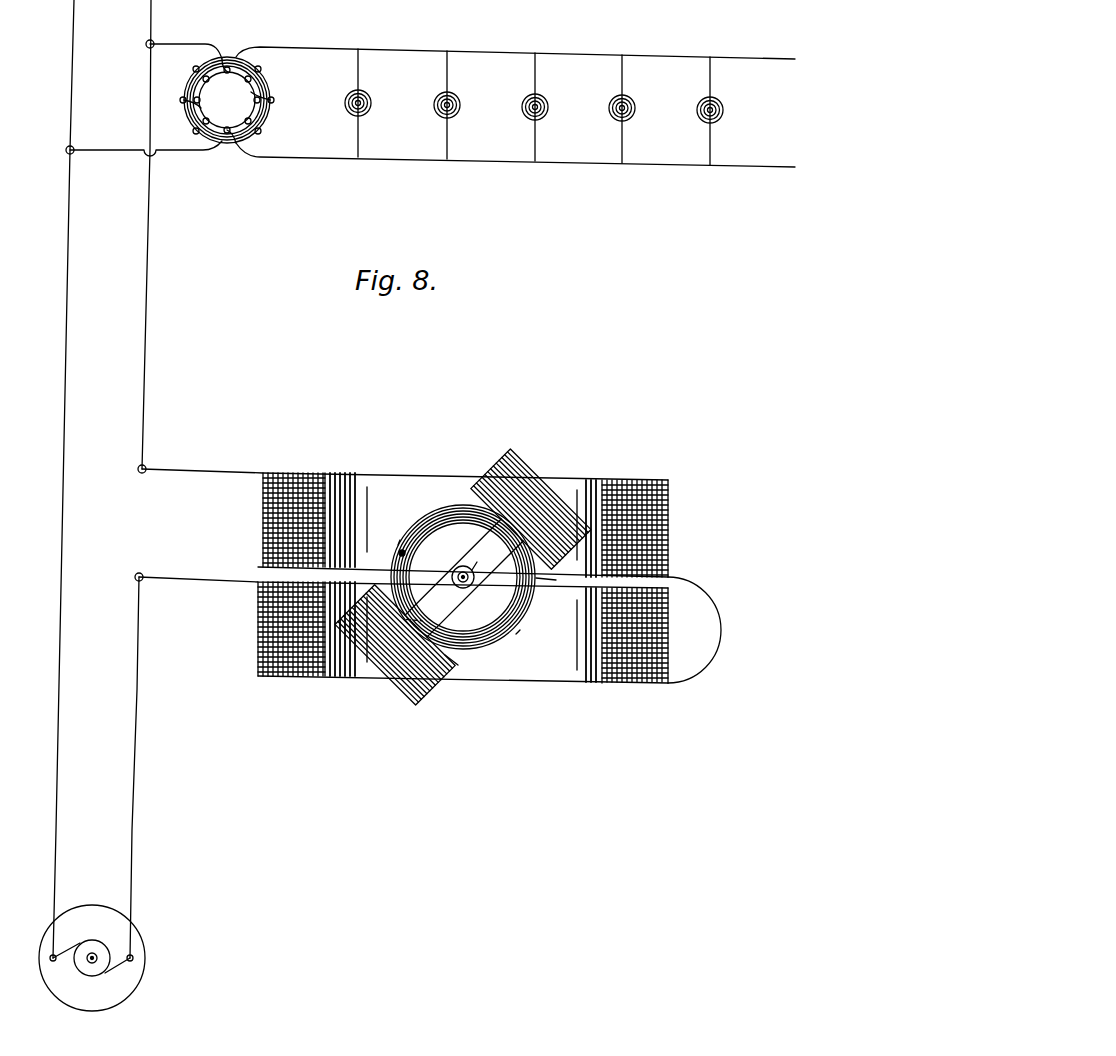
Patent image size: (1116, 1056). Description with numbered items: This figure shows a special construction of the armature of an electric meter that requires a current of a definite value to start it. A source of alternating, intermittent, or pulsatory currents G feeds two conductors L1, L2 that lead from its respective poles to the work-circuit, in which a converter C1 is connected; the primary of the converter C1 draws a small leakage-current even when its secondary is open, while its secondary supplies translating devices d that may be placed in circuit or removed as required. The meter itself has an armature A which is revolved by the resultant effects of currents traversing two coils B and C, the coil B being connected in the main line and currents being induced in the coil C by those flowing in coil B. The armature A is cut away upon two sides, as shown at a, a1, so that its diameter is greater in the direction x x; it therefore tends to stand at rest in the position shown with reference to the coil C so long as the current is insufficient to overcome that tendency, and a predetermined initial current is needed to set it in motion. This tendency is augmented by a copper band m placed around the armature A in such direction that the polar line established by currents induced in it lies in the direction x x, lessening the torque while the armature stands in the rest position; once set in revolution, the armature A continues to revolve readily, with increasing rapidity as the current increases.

The converter C1 is at (227, 100).
The translating devices d is at (541, 107).
The armature A is at (463, 568).
The coil B is at (430, 576).
The coil C is at (463, 585).
The direction of greater diameter x is at (460, 580).
The copper band m is at (472, 568).
The cut-away side of armature a is at (459, 666).
The cut-away side of armature a1 is at (554, 582).
The conductor L1 is at (140, 480).
The conductor L2 is at (65, 480).
The source of electric currents G is at (105, 958).